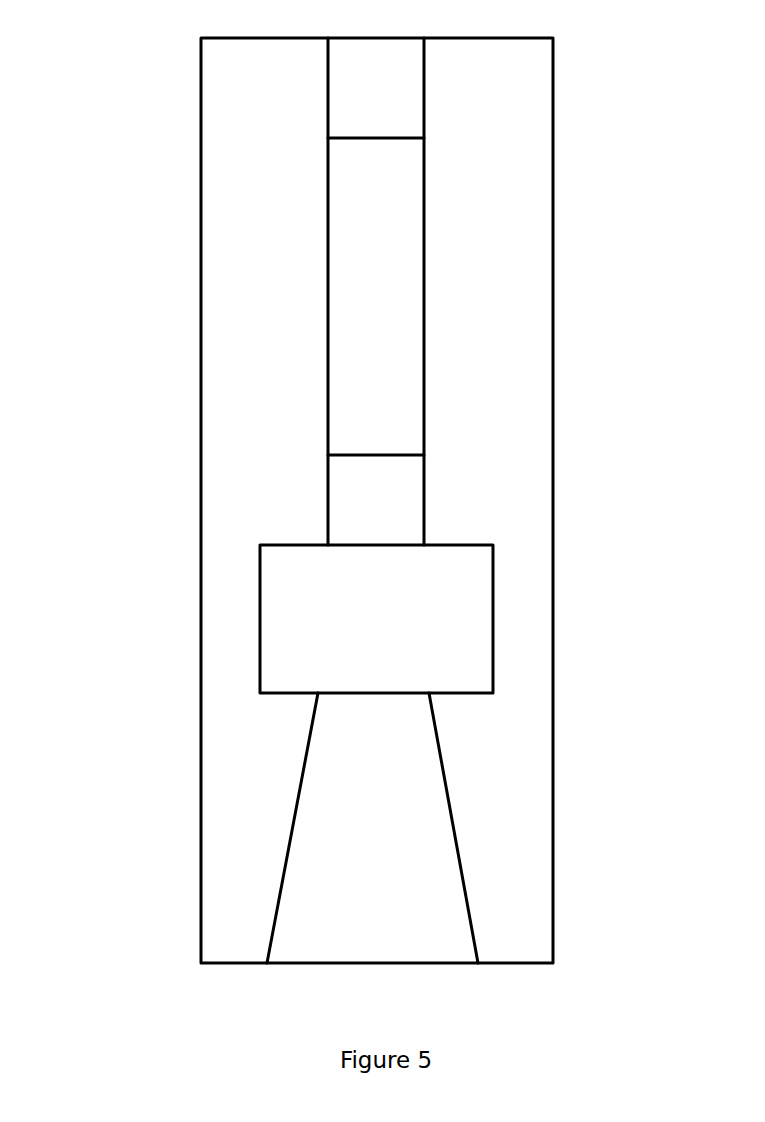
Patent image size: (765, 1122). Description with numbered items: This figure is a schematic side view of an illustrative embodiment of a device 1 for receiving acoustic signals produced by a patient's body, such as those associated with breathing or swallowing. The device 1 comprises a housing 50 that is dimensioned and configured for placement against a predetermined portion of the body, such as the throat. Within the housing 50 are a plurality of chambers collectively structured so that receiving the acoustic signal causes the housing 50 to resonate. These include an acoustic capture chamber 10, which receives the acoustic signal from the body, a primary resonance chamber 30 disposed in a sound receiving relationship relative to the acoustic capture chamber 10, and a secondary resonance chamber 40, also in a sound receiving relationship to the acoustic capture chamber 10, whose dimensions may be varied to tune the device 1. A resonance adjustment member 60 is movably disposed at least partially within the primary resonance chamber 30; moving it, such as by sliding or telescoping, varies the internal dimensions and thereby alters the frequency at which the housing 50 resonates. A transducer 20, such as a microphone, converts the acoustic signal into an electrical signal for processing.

The device 1 is at (166, 282).
The acoustic capture chamber 10 is at (448, 797).
The transducer 20 is at (427, 505).
The primary resonance chamber 30 is at (427, 254).
The secondary resonance chamber 40 is at (494, 620).
The housing 50 is at (201, 612).
The resonance adjustment member 60 is at (427, 107).